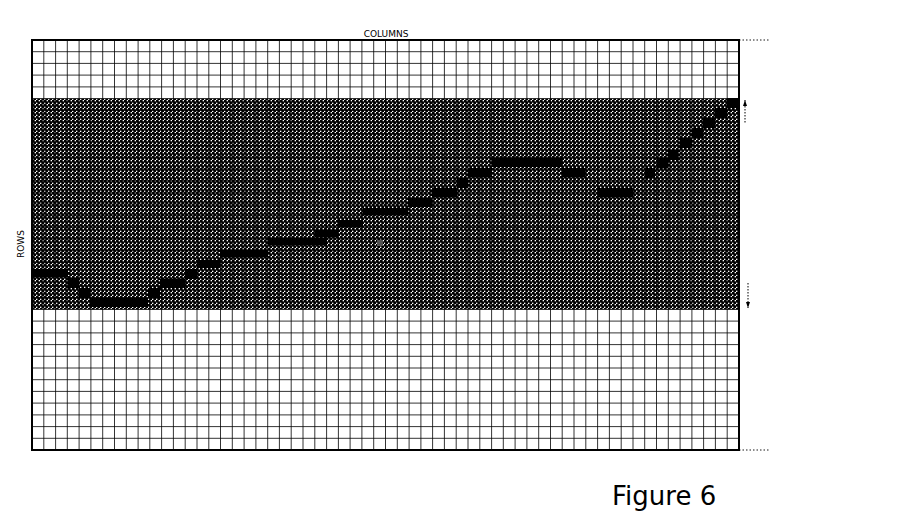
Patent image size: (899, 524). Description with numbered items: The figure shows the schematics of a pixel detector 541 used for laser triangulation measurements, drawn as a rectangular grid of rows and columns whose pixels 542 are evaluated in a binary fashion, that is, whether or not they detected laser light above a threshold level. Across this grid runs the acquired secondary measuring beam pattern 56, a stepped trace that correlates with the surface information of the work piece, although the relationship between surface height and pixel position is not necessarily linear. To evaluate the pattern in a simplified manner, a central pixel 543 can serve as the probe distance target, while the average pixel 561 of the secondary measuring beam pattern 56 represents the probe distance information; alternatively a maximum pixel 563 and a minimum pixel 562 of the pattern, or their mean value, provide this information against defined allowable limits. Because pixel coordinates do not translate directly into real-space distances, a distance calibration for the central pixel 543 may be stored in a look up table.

The secondary measuring beam pattern 56 is at (740, 98).
The pixel detector 541 is at (275, 458).
The pixels 542 is at (740, 437).
The central pixel 543 is at (380, 243).
The average pixel 561 is at (738, 183).
The minimum pixel 562 is at (745, 308).
The maximum pixel 563 is at (745, 100).